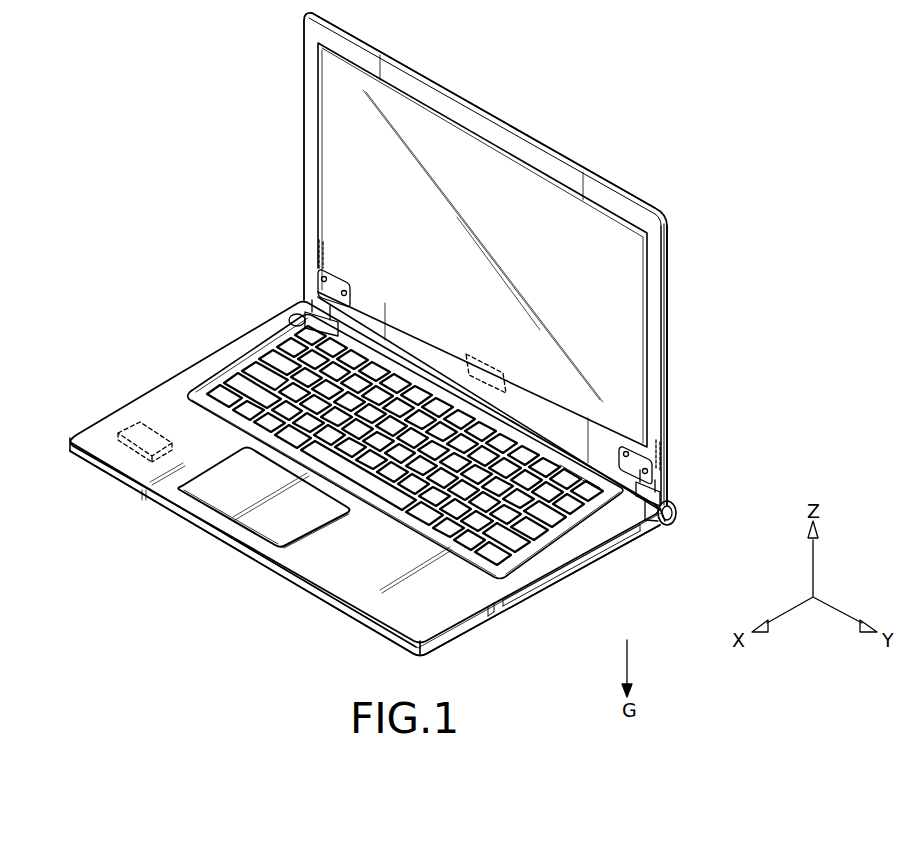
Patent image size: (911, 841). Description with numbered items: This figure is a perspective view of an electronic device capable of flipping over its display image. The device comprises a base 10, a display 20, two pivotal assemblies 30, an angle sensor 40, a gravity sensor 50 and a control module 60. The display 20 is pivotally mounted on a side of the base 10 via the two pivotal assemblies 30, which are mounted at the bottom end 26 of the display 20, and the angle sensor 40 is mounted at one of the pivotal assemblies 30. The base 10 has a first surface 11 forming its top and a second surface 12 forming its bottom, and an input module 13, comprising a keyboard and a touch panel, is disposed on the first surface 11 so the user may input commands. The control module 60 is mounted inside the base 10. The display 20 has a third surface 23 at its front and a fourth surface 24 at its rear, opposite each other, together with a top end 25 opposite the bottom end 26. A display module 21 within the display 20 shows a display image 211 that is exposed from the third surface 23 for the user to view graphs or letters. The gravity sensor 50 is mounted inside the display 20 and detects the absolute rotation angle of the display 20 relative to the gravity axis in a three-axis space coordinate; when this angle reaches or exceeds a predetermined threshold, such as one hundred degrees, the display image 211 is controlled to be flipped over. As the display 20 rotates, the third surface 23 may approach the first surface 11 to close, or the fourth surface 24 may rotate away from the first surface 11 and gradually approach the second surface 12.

The base 10 is at (132, 386).
The first surface 11 is at (445, 598).
The second surface 12 is at (443, 648).
The input module 13 is at (223, 380).
The display 20 is at (298, 143).
The display module 21 is at (319, 216).
The display image 211 is at (333, 192).
The third surface 23 is at (654, 276).
The fourth surface 24 is at (667, 257).
The top end 25 is at (604, 185).
The bottom end 26 is at (548, 487).
The pivotal assembly 30 is at (304, 270).
The angle sensor 40 is at (668, 519).
The gravity sensor 50 is at (486, 360).
The control module 60 is at (117, 420).